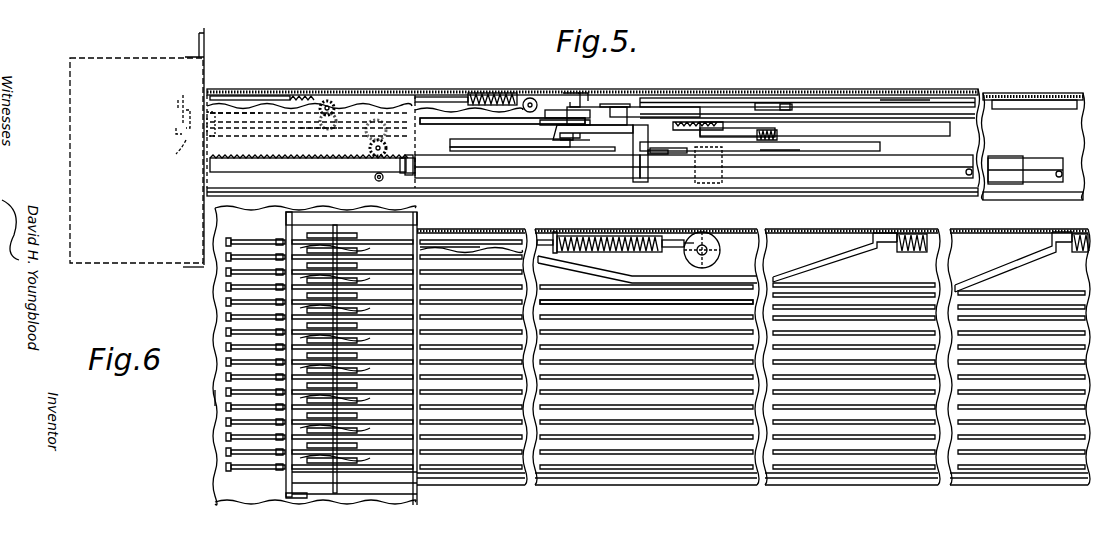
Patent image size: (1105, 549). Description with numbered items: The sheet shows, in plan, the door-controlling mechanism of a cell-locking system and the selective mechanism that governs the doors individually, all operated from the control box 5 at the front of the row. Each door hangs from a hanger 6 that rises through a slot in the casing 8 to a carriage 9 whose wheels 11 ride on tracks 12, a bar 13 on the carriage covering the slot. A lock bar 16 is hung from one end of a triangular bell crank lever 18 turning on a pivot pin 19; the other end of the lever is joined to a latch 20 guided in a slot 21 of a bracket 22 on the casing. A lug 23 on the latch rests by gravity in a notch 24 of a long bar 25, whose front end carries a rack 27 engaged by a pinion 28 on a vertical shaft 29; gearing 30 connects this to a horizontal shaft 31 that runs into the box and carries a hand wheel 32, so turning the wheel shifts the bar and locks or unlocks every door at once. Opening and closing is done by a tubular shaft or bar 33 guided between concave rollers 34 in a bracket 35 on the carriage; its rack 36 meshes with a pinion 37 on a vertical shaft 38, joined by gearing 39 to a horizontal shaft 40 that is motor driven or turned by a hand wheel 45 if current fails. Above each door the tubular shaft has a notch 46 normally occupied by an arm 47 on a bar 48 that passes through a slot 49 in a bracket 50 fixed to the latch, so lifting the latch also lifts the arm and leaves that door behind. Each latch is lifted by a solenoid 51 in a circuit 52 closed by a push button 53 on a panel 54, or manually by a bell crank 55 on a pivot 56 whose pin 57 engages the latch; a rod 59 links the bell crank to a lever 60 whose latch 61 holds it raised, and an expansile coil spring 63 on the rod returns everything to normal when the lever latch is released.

In FIG. 5, the box 5 is at (72, 80).
In FIG. 6, the box 5 is at (218, 398).
In FIG. 5, the hanger 6 is at (702, 183).
In FIG. 5, the casing 8 is at (270, 90).
In FIG. 6, the casing 8 is at (1002, 232).
In FIG. 5, the carriage 9 is at (746, 142).
In FIG. 5, the wheels 11 is at (766, 142).
In FIG. 5, the tracks 12 is at (895, 138).
In FIG. 5, the bar 13 is at (875, 152).
In FIG. 5, the lock bar 16 is at (762, 104).
In FIG. 5, the bell crank lever 18 is at (774, 104).
In FIG. 5, the pivot pin 19 is at (790, 115).
In FIG. 5, the latch 20 is at (724, 106).
In FIG. 5, the slot 21 is at (597, 116).
In FIG. 5, the bracket 22 is at (550, 118).
In FIG. 5, the lug 23 is at (574, 94).
In FIG. 5, the notch 24 is at (588, 94).
In FIG. 5, the bar 25 is at (883, 101).
In FIG. 5, the rack 27 is at (306, 98).
In FIG. 5, the pinion 28 is at (336, 118).
In FIG. 5, the vertical shaft 29 is at (328, 102).
In FIG. 5, the gearing 30 is at (324, 137).
In FIG. 5, the horizontal shaft 31 is at (230, 106).
In FIG. 5, the hand wheel 32 is at (192, 88).
In FIG. 5, the tubular shaft or bar 33 is at (948, 157).
In FIG. 5, the concave rollers 34 is at (722, 154).
In FIG. 5, the bracket 35 is at (770, 150).
In FIG. 5, the rack 36 is at (288, 158).
In FIG. 5, the pinion 37 is at (370, 148).
In FIG. 5, the vertical shaft 38 is at (372, 158).
In FIG. 5, the gearing 39 is at (520, 156).
In FIG. 5, the horizontal shaft 40 is at (250, 138).
In FIG. 5, the hand wheel 45 is at (186, 140).
In FIG. 5, the notch 46 is at (630, 178).
In FIG. 5, the arm 47 is at (642, 182).
In FIG. 5, the bar 48 is at (448, 120).
In FIG. 5, the slot 49 is at (666, 117).
In FIG. 5, the bracket 50 is at (628, 110).
In FIG. 5, the solenoid 51 is at (529, 98).
In FIG. 6, the solenoid 51 is at (718, 260).
In FIG. 5, the circuit 52 is at (428, 110).
In FIG. 6, the circuit 52 is at (460, 248).
In FIG. 6, the push button 53 is at (276, 328).
In FIG. 6, the panel 54 is at (286, 490).
In FIG. 5, the bell crank 55 is at (660, 154).
In FIG. 6, the bell crank 55 is at (678, 243).
In FIG. 6, the pivot 56 is at (683, 251).
In FIG. 5, the pin 57 is at (510, 118).
In FIG. 6, the pin 57 is at (722, 251).
In FIG. 5, the rod 59 is at (280, 102).
In FIG. 6, the lever 60 is at (345, 237).
In FIG. 6, the latch 61 is at (250, 260).
In FIG. 5, the expansile coil spring 63 is at (486, 93).